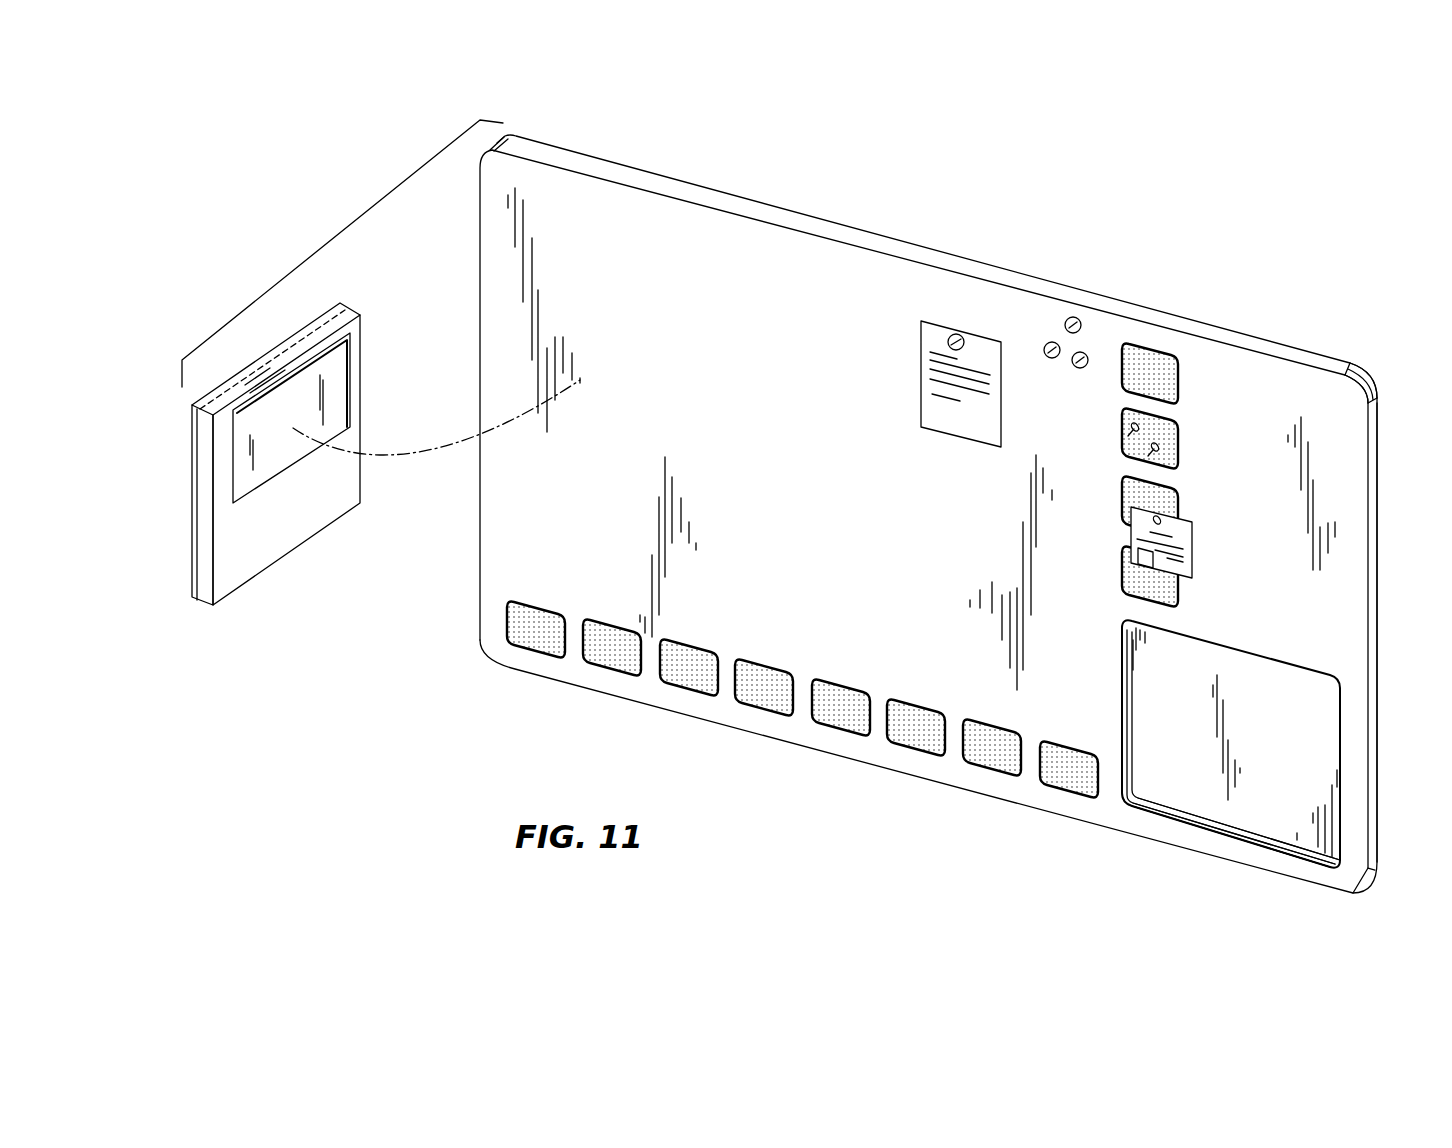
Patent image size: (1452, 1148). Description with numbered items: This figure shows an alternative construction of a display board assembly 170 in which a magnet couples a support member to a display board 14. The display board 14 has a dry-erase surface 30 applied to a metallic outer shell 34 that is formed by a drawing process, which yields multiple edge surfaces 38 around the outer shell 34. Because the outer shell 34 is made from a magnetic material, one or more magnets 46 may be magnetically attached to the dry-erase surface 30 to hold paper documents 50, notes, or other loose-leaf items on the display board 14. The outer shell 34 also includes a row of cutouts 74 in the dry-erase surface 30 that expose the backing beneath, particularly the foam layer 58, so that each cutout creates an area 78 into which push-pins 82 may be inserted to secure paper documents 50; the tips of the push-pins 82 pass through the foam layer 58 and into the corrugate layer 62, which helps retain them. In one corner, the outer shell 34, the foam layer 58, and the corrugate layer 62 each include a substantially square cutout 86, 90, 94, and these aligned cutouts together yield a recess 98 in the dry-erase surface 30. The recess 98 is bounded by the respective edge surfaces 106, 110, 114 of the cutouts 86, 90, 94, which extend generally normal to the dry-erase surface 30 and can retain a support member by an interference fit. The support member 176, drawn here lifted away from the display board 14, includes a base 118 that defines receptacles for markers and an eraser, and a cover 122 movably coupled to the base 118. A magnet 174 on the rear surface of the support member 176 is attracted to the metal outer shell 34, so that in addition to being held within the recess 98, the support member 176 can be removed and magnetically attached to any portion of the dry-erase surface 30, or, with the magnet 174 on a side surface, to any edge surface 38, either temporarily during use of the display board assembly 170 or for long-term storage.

The display board 14 is at (1284, 313).
The dry-erase surface 30 is at (827, 486).
The outer shell 34 is at (1350, 472).
The edge surfaces 38 is at (1115, 305).
The magnets 46 is at (947, 342).
The paper documents 50 is at (953, 423).
The foam layer 58 is at (1373, 385).
The corrugate layer 62 is at (1368, 373).
The cutouts 74 is at (602, 673).
The areas 78 is at (608, 625).
The push-pins 82 is at (1148, 454).
The cutout 86 is at (1123, 743).
The cutout 90 is at (1127, 707).
The cutout 94 is at (1132, 678).
The recess 98 is at (1178, 797).
The edge surface 106 is at (1207, 832).
The edge surface 110 is at (1240, 840).
The edge surface 114 is at (1273, 840).
The base 118 is at (304, 520).
The cover 122 is at (190, 513).
The display board assembly 170 is at (331, 239).
The magnet 174 is at (333, 368).
The support member 176 is at (268, 596).